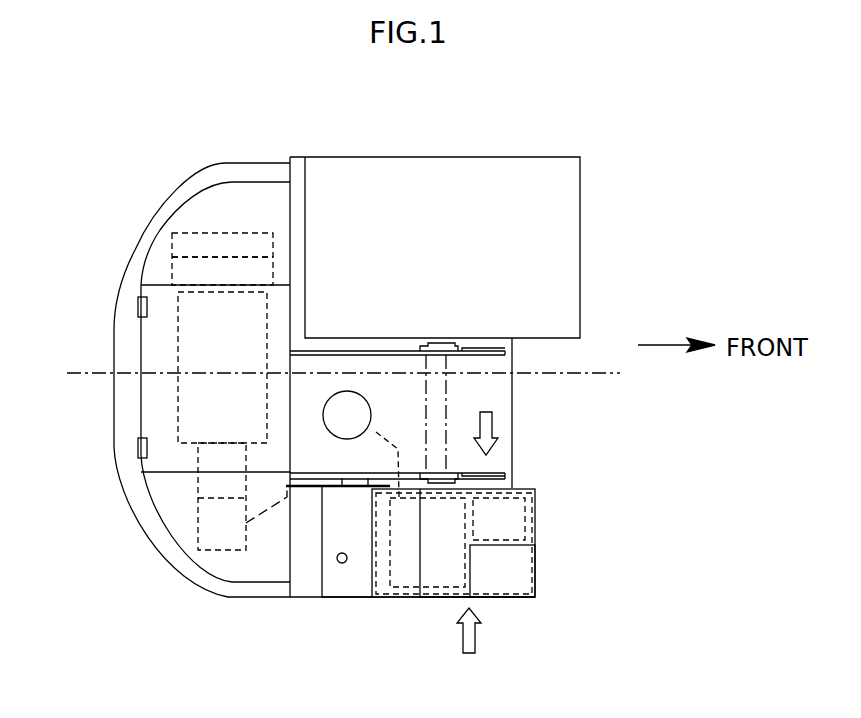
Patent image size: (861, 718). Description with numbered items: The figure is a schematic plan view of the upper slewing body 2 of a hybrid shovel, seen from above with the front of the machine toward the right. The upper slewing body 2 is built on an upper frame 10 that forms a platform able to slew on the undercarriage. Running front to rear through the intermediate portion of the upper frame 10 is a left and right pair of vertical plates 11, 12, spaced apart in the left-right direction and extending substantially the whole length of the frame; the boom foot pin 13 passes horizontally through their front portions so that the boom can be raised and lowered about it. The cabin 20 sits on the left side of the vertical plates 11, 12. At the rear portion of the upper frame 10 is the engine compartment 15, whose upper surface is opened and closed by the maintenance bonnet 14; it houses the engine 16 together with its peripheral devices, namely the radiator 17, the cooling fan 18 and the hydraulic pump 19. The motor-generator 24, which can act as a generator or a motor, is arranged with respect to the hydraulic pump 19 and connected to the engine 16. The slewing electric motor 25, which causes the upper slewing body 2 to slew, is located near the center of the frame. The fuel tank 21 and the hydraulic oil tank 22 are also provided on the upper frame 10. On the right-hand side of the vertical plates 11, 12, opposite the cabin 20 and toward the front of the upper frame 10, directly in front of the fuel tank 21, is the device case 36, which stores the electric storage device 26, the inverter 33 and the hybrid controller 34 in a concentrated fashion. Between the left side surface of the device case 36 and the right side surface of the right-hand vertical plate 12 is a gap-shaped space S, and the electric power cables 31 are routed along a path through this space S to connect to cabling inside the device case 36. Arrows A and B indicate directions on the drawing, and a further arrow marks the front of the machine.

The upper slewing body 2 is at (280, 143).
The upper frame 10 is at (512, 418).
The left vertical plate 11 is at (352, 350).
The right vertical plate 12 is at (342, 480).
The boom foot pin 13 is at (447, 382).
The maintenance bonnet 14 is at (150, 343).
The engine compartment 15 is at (152, 394).
The engine 16 is at (178, 420).
The radiator 17 is at (170, 272).
The cooling fan 18 is at (202, 230).
The hydraulic pump 19 is at (198, 485).
The cabin 20 is at (510, 157).
The fuel tank 21 is at (355, 595).
The hydraulic oil tank 22 is at (305, 592).
The motor-generator 24 is at (222, 553).
The slewing electric motor 25 is at (371, 402).
The electric storage device 26 is at (497, 603).
The electric power cables 31 is at (397, 458).
The inverter 33 is at (428, 603).
The hybrid controller 34 is at (530, 517).
The device case 36 is at (537, 572).
The gap-shaped space S is at (315, 478).
The direction arrow A is at (469, 651).
The direction arrow B is at (486, 419).